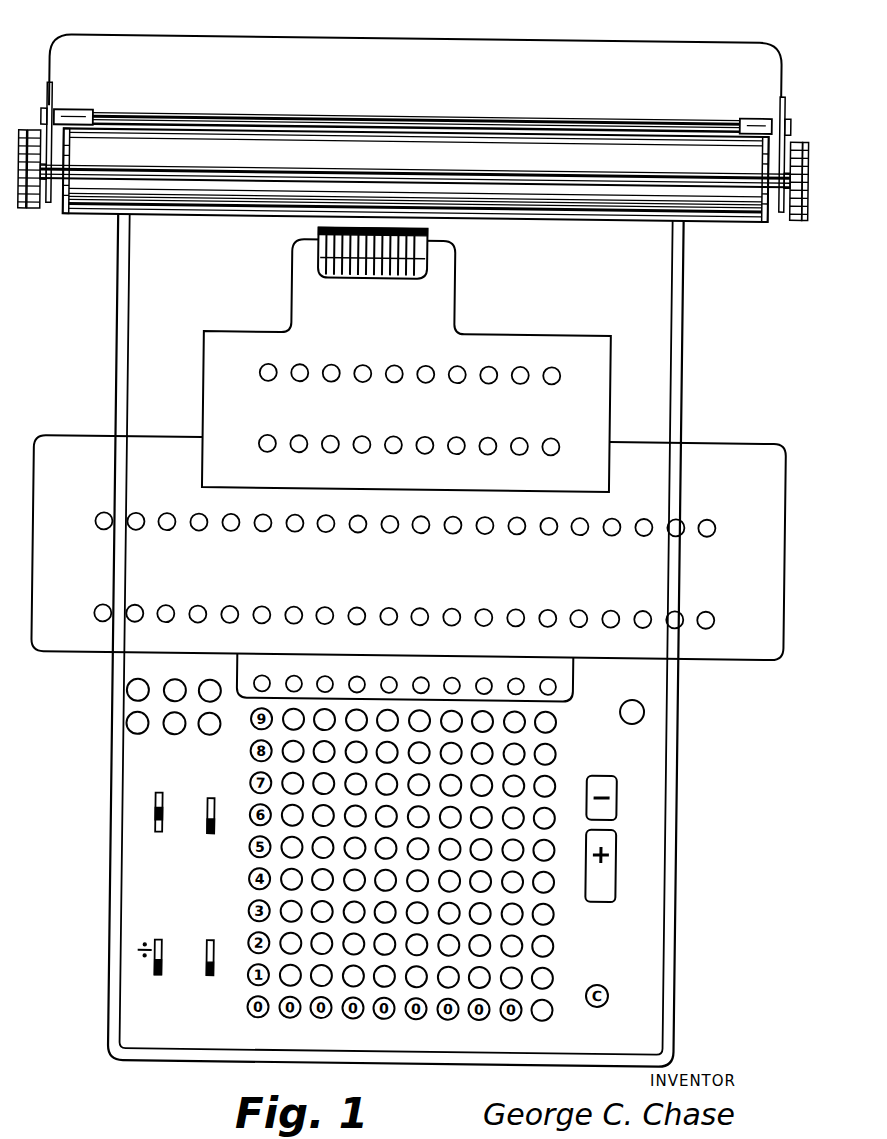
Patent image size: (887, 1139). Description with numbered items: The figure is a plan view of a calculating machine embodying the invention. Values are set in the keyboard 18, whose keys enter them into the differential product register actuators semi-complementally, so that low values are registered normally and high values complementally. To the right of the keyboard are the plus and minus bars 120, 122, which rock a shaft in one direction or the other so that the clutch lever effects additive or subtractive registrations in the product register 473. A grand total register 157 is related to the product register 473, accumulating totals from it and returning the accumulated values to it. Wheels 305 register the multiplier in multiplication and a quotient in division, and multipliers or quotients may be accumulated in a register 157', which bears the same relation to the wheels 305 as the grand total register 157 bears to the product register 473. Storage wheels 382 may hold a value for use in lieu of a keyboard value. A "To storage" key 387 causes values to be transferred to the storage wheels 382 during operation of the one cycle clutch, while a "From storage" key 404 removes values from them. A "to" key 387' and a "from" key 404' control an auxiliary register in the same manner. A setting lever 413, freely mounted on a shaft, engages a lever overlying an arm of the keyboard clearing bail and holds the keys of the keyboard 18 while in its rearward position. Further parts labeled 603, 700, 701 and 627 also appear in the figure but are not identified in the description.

The type bar segment 603 is at (420, 234).
The register 157' is at (410, 353).
The wheels 305 is at (362, 440).
The grand total register 157 is at (405, 545).
The product register 473 is at (611, 610).
The storage wheels 382 is at (453, 678).
The "to" key for the auxiliary register 387' is at (98, 691).
The "To storage" key 387 is at (189, 663).
The ST key 701 is at (212, 682).
The auxiliary register "from" key 404' is at (98, 740).
The "From storage" key 404 is at (160, 748).
The T key 700 is at (214, 738).
The L-B-C control slider 627 is at (157, 816).
The setting lever 413 is at (211, 831).
The minus bar 122 is at (613, 803).
The plus bar 120 is at (613, 876).
The keyboard 18 is at (558, 914).